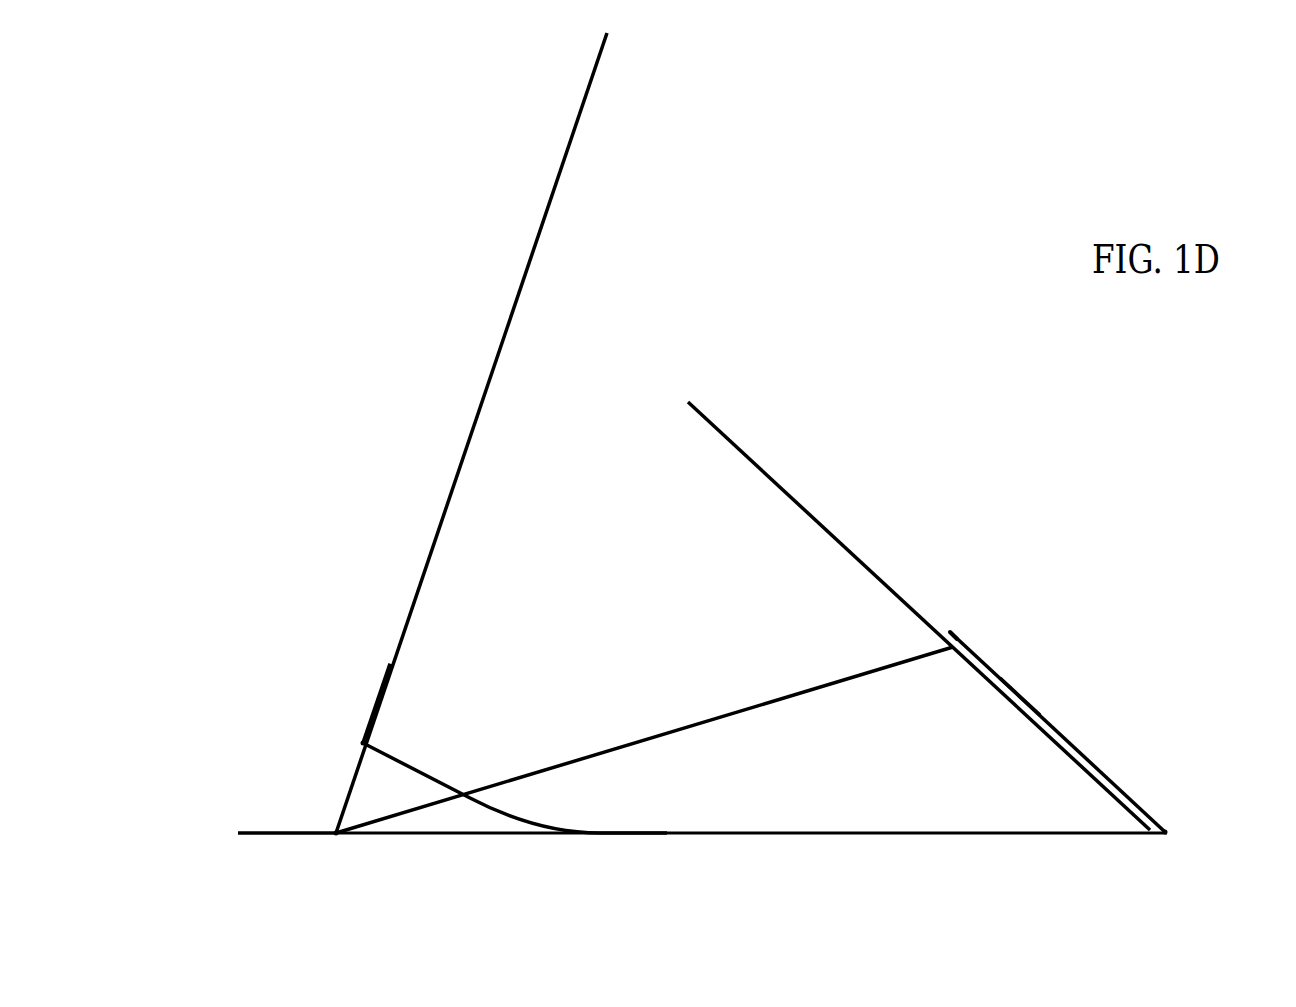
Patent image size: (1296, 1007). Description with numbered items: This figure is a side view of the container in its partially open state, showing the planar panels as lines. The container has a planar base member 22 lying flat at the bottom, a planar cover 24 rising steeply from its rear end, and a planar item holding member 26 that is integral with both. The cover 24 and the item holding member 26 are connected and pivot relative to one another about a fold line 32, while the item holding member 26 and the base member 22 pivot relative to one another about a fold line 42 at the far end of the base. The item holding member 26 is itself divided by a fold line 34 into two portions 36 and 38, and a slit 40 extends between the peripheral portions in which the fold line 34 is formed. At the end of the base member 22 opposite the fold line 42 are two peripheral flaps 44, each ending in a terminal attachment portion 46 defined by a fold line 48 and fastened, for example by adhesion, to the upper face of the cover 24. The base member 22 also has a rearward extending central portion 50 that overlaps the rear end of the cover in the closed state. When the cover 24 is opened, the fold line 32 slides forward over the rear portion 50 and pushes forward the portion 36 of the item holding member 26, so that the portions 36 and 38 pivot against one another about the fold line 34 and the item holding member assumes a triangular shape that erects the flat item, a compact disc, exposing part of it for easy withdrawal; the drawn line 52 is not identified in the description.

The planar base member 22 is at (850, 832).
The planar cover 24 is at (490, 385).
The planar item holding member 26 is at (845, 611).
The fold line 32 is at (335, 832).
The fold line 34 is at (967, 645).
The portion of item holding member 36 is at (640, 740).
The portion of item holding member 38 is at (1018, 690).
The slit 40 is at (947, 633).
The fold line 42 is at (1167, 832).
The peripheral flaps 44 is at (422, 770).
The terminal attachment portion 46 is at (375, 698).
The fold line 48 is at (368, 742).
The rearward extending central portion 50 is at (277, 838).
The long diagonal line 52 is at (800, 503).